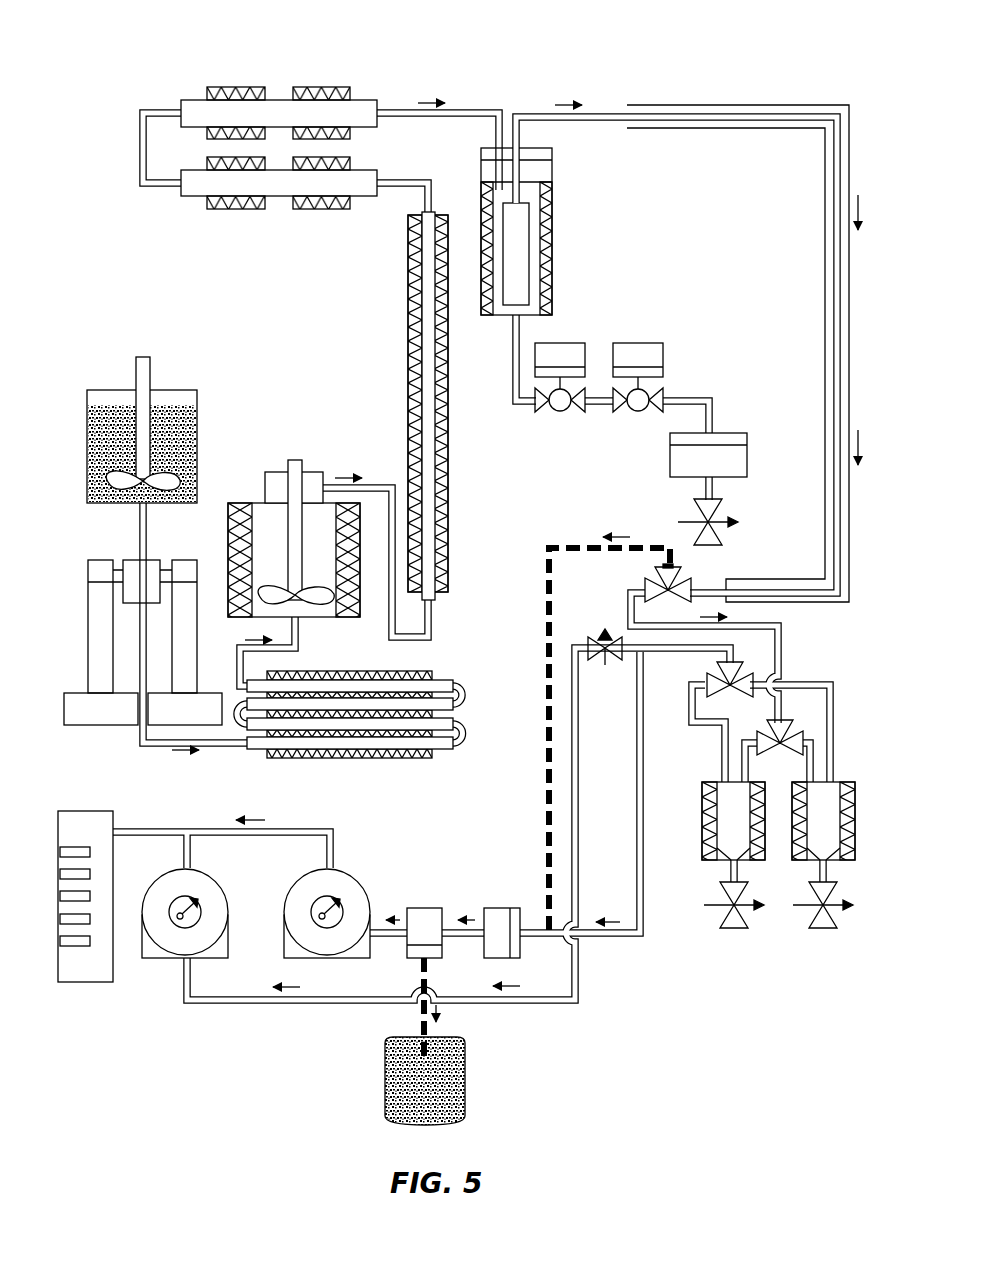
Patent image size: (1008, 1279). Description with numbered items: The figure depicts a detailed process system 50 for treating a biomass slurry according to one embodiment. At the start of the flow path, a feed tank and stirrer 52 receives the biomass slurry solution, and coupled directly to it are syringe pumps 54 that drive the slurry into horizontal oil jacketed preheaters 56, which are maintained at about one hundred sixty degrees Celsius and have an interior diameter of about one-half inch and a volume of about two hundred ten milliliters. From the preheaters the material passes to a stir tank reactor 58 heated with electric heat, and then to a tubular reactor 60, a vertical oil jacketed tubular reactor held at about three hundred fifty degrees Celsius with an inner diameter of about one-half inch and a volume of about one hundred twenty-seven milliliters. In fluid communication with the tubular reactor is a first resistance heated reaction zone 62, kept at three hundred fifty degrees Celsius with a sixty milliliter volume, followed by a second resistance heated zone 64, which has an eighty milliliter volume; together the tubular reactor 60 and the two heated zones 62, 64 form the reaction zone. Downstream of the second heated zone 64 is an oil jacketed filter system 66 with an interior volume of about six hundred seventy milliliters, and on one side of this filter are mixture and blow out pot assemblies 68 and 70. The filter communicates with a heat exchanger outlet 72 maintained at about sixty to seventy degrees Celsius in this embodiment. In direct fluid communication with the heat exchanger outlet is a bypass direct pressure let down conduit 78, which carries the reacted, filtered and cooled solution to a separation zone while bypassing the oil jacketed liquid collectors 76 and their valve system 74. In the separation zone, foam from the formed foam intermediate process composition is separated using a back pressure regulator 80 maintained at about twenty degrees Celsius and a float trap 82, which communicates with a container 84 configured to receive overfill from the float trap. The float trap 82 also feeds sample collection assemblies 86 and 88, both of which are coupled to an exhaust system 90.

The process system 50 is at (610, 52).
The feed tank and stirrer 52 is at (197, 427).
The syringe pumps 54 is at (92, 725).
The horizontal oil jacketed preheaters 56 is at (300, 758).
The stir tank reactor 58 is at (243, 503).
The tubular reactor 60 is at (448, 503).
The reaction zone 1 62 is at (190, 197).
The resistance heated zone 2 64 is at (196, 100).
The oil jacketed filter system 66 is at (552, 225).
The mixture and blow out pot assembly 68 is at (648, 343).
The mixture and blow out pot assembly 70 is at (670, 453).
The heat exchanger outlet 72 is at (805, 603).
The valve system 74 is at (733, 930).
The oil jacketed liquid collectors 76 is at (702, 818).
The bypass direct pressure let down conduit 78 is at (546, 650).
The back pressure regulator 80 is at (504, 908).
The float trap 82 is at (432, 908).
The container 84 is at (468, 1078).
The sample collection assembly 86 is at (360, 885).
The sample collection assembly 88 is at (220, 885).
The exhaust system 90 is at (95, 982).